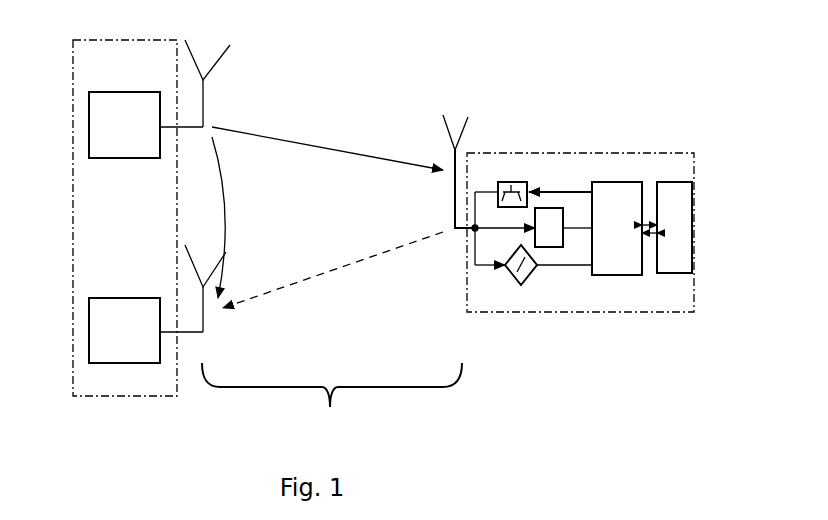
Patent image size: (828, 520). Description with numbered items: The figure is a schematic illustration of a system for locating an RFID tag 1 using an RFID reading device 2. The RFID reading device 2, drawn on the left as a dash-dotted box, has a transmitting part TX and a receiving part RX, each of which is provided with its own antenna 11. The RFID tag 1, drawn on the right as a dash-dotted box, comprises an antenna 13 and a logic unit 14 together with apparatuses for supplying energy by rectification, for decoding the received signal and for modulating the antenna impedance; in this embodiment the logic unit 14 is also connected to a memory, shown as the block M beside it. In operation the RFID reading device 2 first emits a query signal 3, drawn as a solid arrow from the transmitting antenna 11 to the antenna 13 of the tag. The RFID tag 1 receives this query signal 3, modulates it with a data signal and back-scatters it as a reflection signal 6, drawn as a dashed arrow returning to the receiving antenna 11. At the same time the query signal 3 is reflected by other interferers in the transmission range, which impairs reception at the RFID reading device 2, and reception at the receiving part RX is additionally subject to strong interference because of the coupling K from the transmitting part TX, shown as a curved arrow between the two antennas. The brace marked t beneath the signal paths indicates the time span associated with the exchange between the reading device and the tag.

The RFID tag 1 is at (580, 260).
The RFID reading device 2 is at (132, 396).
The query signal 3 is at (327, 144).
The reflection signal 6 is at (333, 270).
The antenna 11 is at (214, 56).
The antenna 13 is at (472, 113).
The logic unit 14 is at (617, 228).
The coupling K is at (244, 277).
The time span t is at (332, 403).